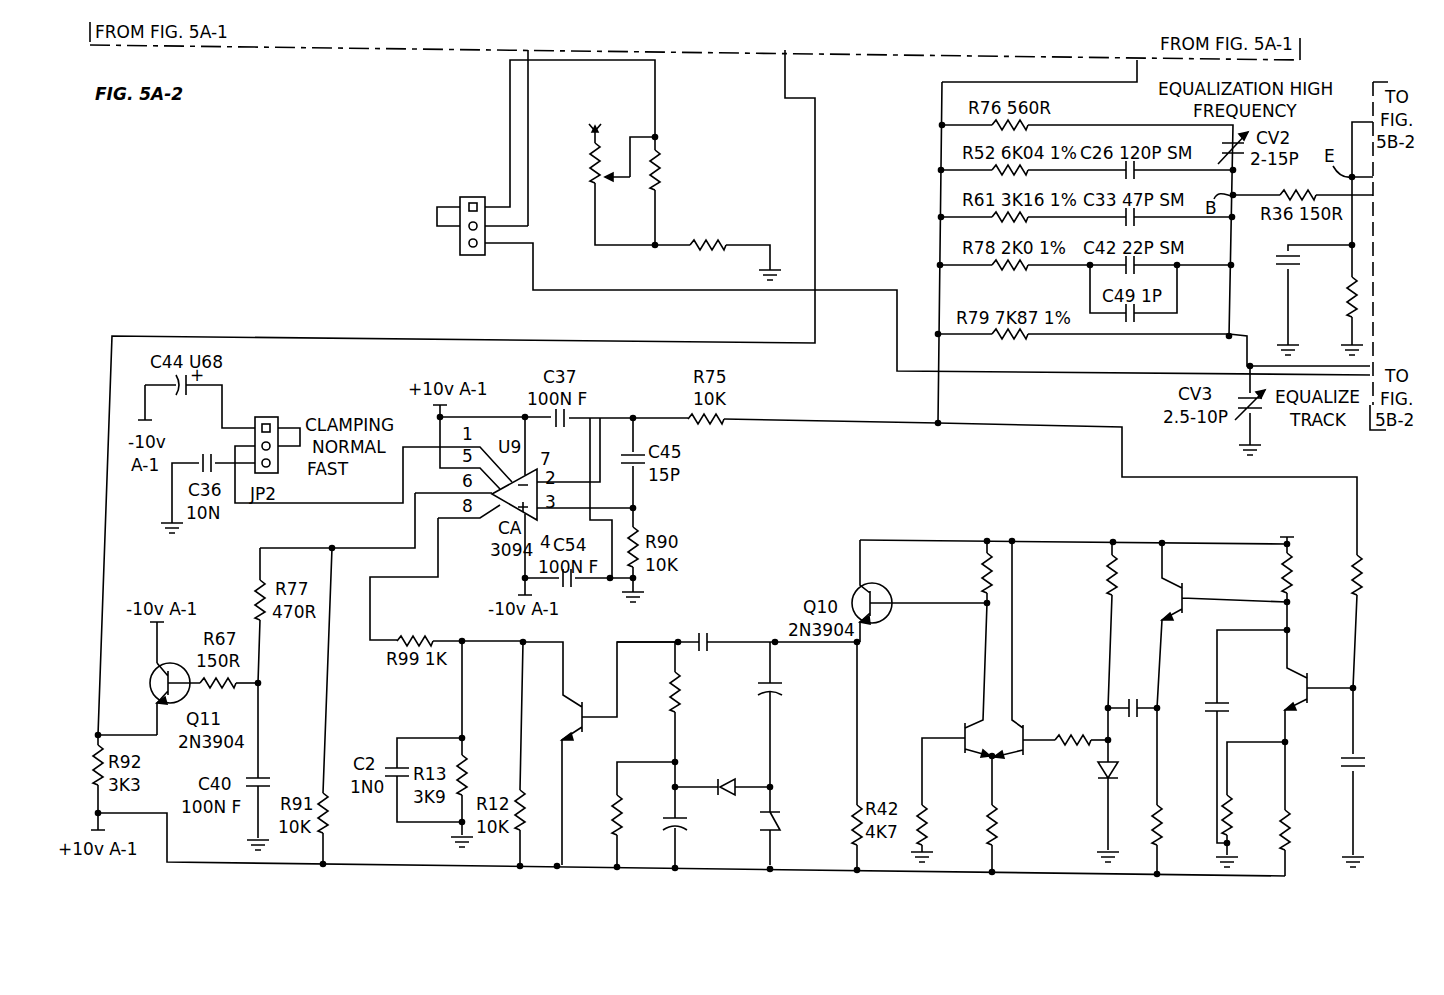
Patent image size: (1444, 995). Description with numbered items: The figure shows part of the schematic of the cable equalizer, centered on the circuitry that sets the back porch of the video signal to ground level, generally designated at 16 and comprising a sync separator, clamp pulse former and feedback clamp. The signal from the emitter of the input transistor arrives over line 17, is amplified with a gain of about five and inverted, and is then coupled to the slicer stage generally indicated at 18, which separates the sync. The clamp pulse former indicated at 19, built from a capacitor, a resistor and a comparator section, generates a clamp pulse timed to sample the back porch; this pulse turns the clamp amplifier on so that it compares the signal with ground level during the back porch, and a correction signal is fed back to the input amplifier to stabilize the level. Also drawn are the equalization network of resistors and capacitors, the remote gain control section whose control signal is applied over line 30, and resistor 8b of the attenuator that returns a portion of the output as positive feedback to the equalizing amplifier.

The line 30 is at (853, 291).
The line 17 is at (940, 400).
The sync separator, clamp pulse former and feedback clamp 16 is at (1080, 512).
The slicer 18 is at (1055, 664).
The clamp pulse generator 19 is at (659, 680).
The resistor 8b is at (1340, 325).